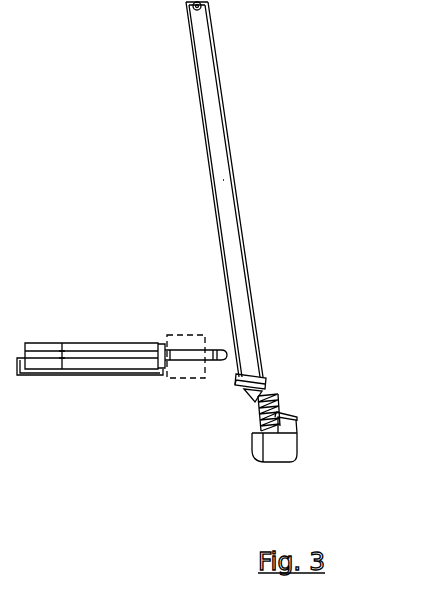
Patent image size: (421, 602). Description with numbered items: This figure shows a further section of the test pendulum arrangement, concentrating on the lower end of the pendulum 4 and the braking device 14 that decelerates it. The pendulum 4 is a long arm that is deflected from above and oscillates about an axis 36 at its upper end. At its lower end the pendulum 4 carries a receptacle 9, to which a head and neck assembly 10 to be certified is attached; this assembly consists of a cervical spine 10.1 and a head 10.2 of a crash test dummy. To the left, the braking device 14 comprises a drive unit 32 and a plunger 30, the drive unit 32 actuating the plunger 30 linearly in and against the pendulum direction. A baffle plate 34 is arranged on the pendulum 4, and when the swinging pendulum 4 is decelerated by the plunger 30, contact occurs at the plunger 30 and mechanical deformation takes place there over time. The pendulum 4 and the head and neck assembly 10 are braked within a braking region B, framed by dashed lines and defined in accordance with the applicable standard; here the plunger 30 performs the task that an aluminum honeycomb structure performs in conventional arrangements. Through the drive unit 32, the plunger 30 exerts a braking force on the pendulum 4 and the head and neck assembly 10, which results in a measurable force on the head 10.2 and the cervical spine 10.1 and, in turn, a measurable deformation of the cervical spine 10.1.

The pendulum 4 is at (222, 192).
The axis 36 is at (203, 3).
The receptacle 9 is at (262, 373).
The head and neck assembly 10 is at (232, 433).
The cervical spine 10.1 is at (278, 402).
The head 10.2 is at (270, 448).
The braking device 14 is at (60, 392).
The plunger 30 is at (180, 357).
The drive unit 32 is at (43, 348).
The baffle plate 34 is at (217, 382).
The braking region B is at (187, 335).